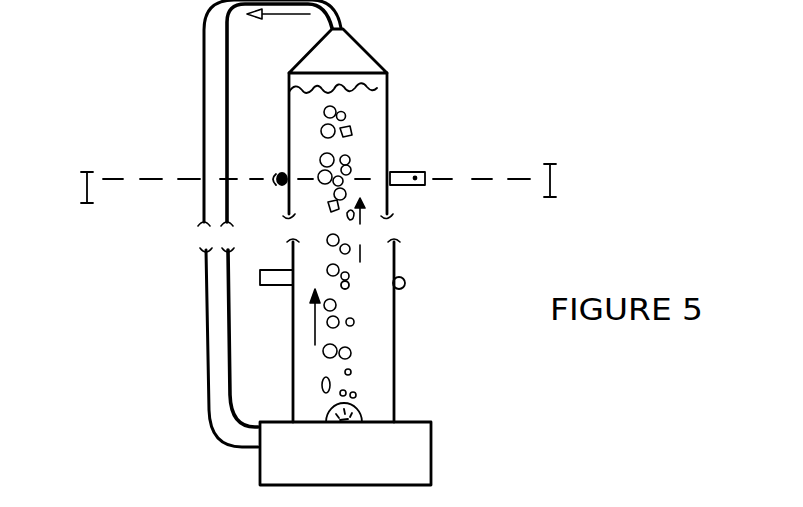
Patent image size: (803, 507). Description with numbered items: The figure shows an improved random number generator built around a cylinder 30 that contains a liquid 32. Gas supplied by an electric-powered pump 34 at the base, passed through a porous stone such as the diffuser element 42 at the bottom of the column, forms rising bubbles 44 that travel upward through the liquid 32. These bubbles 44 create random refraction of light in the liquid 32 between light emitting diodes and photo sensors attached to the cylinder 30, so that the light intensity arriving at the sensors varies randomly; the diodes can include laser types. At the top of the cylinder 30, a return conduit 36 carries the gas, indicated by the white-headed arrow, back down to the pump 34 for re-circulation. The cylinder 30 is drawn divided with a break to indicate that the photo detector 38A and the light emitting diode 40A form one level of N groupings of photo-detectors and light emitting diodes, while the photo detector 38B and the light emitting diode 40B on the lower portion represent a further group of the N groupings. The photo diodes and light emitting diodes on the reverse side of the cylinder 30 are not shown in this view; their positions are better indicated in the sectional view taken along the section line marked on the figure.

The cylinder 30 is at (392, 77).
The liquid 32 is at (310, 128).
The electric-powered pump 34 is at (426, 472).
The return conduit 36 is at (210, 137).
The photo detector 38A is at (348, 170).
The photo detector 38B is at (405, 278).
The light emitting diode 40A is at (403, 172).
The light emitting diode 40B is at (268, 284).
The diffuser 42 is at (365, 404).
The rising bubbles 44 is at (328, 354).